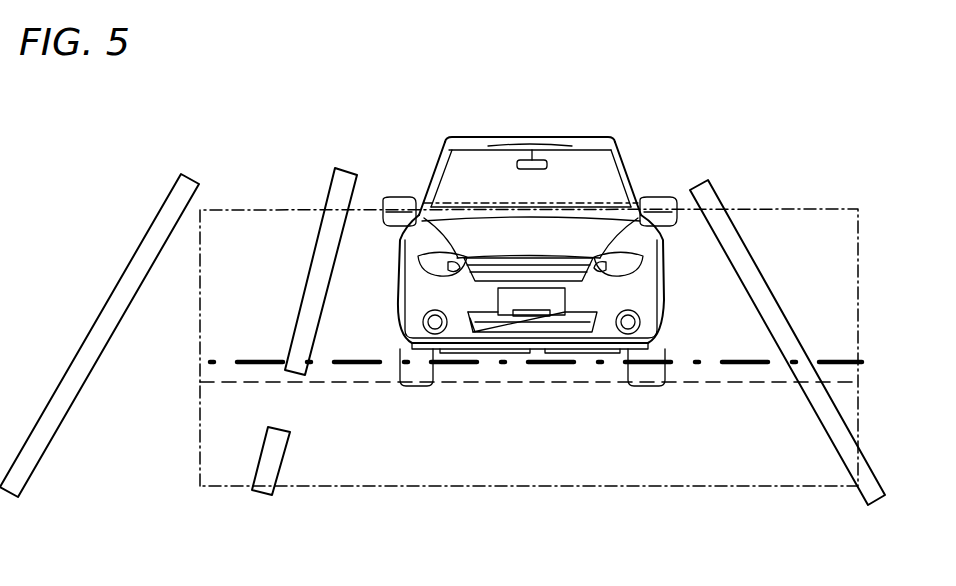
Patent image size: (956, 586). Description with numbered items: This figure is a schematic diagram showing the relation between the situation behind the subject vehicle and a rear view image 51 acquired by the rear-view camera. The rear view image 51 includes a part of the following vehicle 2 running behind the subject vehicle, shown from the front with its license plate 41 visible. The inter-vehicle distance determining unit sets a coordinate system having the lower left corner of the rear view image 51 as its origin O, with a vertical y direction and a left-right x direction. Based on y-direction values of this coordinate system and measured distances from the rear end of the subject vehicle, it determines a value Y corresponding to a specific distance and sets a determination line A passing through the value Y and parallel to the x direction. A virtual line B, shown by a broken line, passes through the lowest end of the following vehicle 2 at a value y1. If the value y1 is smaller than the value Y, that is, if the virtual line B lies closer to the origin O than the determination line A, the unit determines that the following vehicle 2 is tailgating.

The following vehicle 2 is at (592, 101).
The rear view image 51 is at (791, 207).
The license plate 41 is at (519, 315).
The determination line A is at (742, 365).
The virtual line B is at (575, 383).
The value Y is at (511, 362).
The value y1 is at (509, 384).
The origin O is at (186, 496).